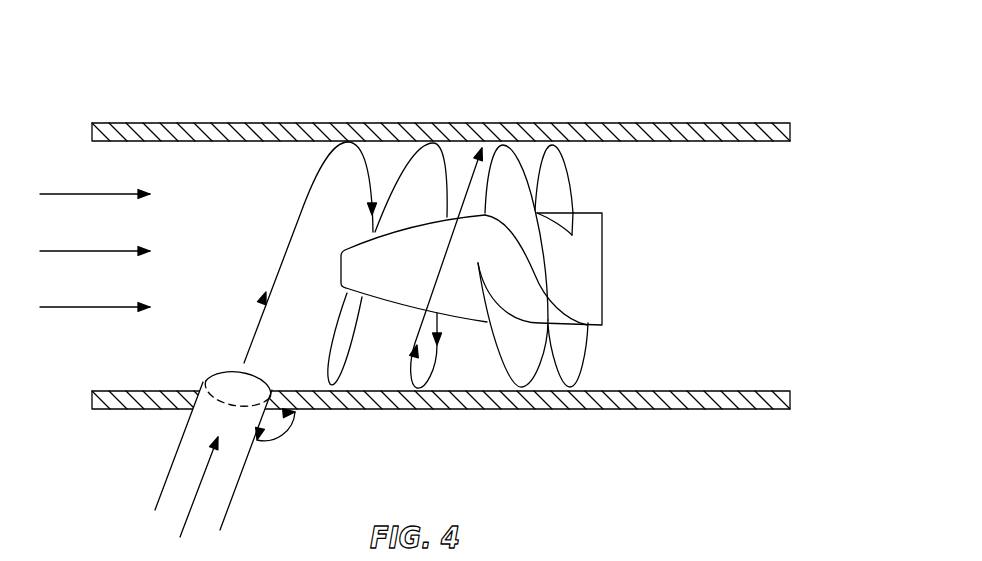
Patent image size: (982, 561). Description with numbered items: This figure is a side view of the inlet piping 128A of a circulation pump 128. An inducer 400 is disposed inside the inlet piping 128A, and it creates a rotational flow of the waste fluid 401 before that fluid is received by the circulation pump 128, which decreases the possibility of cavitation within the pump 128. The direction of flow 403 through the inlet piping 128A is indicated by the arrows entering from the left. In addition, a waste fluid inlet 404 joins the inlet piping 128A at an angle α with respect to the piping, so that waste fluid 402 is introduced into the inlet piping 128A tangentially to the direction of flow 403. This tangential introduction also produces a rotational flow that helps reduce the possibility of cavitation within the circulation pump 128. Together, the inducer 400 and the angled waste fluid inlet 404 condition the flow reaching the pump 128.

The circulation pump 128 is at (215, 120).
The inlet piping 128A is at (772, 193).
The inducer 400 is at (587, 230).
The waste fluid 401 is at (85, 168).
The waste fluid 402 is at (197, 493).
The direction of flow 403 is at (65, 308).
The waste fluid inlet 404 is at (240, 478).